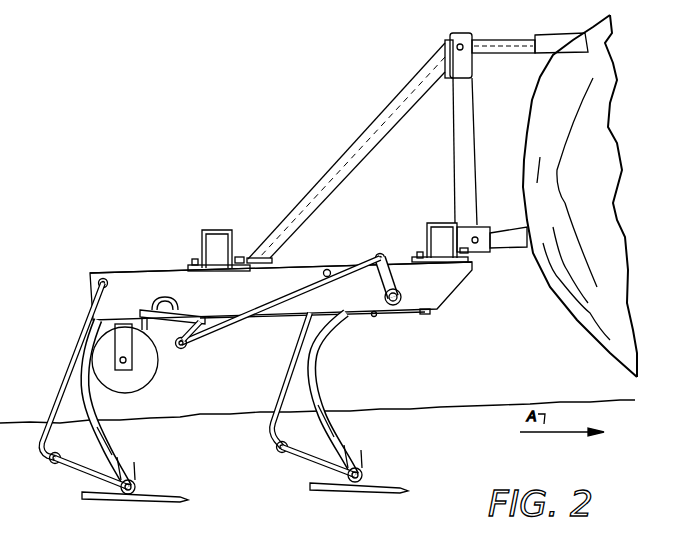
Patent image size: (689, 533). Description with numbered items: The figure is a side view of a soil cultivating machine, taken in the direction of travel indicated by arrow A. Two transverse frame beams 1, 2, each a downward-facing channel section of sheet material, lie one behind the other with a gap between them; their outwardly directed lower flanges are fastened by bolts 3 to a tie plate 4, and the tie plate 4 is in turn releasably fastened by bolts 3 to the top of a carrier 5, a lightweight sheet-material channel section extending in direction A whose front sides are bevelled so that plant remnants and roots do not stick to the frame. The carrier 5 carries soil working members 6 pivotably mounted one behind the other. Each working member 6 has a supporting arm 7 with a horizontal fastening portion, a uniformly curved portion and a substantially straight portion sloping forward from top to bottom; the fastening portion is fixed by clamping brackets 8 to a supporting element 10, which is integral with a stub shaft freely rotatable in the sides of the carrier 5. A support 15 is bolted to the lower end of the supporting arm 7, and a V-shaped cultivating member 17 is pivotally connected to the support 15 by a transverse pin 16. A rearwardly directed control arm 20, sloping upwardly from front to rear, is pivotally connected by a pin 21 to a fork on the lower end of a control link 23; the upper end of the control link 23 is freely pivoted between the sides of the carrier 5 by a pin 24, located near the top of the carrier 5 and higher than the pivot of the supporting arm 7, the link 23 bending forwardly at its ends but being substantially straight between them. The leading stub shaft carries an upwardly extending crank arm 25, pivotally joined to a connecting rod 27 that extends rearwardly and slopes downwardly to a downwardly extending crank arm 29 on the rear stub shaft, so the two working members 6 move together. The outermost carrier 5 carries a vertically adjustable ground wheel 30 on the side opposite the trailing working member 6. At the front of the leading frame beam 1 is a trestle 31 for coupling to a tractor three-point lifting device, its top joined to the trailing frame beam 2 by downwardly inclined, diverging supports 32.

The frame beam 1 is at (474, 236).
The frame beam 2 is at (328, 237).
The bolts 3 is at (293, 252).
The tie plate 4 is at (281, 277).
The carrier 5 is at (281, 278).
The soil working member 6 is at (92, 402).
The supporting arm 7 is at (204, 430).
The clamping brackets 8 is at (363, 333).
The supporting element 10 is at (157, 296).
The support 15 is at (258, 458).
The pin 16 is at (269, 475).
The cultivating member 17 is at (245, 505).
The control arm 20 is at (190, 469).
The pin 21 is at (144, 452).
The control link 23 is at (162, 370).
The pin 24 is at (230, 265).
The crank arm 25 is at (200, 394).
The connecting rod 27 is at (280, 300).
The crank arm 29 is at (194, 355).
The ground wheel 30 is at (150, 362).
The trestle 31 is at (499, 129).
The supports 32 is at (350, 151).